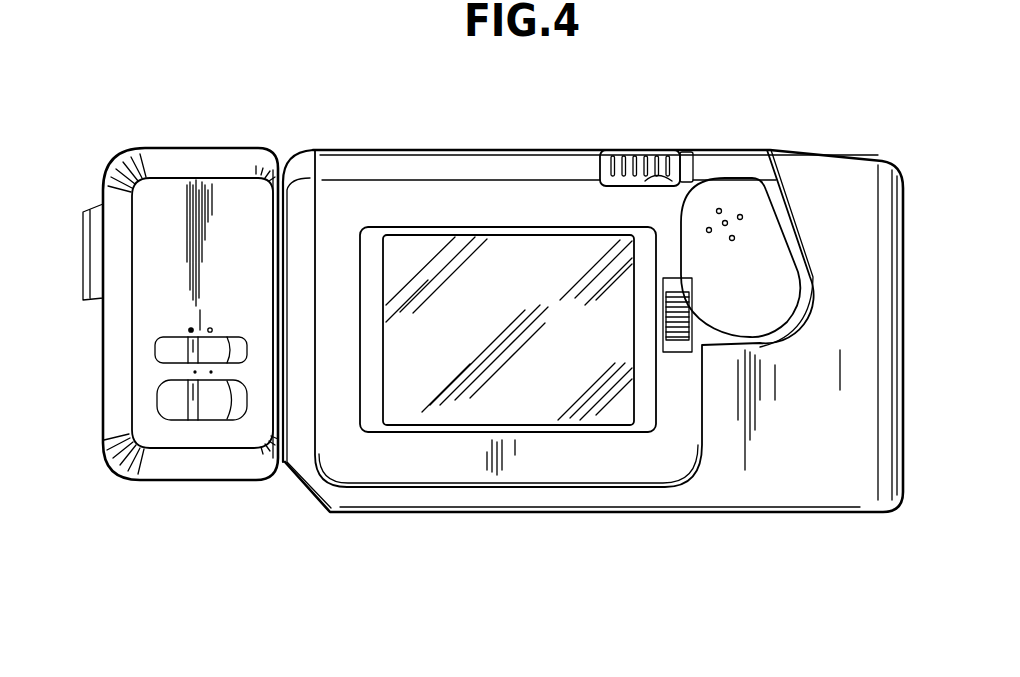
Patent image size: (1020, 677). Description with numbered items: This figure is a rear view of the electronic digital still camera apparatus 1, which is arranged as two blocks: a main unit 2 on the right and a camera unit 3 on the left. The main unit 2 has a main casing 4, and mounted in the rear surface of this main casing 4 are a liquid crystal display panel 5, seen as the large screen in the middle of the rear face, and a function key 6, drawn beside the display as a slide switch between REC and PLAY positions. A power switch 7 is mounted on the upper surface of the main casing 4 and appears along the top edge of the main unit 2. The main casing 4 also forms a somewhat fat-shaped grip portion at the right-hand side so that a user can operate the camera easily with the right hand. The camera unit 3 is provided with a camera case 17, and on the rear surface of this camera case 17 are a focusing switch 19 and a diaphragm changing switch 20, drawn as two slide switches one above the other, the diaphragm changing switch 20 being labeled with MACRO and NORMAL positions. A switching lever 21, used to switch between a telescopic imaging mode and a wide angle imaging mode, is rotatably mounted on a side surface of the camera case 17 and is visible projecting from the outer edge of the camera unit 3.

The electronic digital still camera apparatus 1 is at (283, 150).
The main unit 2 is at (508, 151).
The camera unit 3 is at (190, 275).
The main casing 4 is at (743, 495).
The liquid crystal display panel 5 is at (450, 410).
The function key 6 is at (662, 324).
The power switch 7 is at (649, 162).
The camera case 17 is at (149, 158).
The focusing switch 19 is at (173, 415).
The diaphragm changing switch 20 is at (167, 347).
The switching lever 21 is at (86, 265).